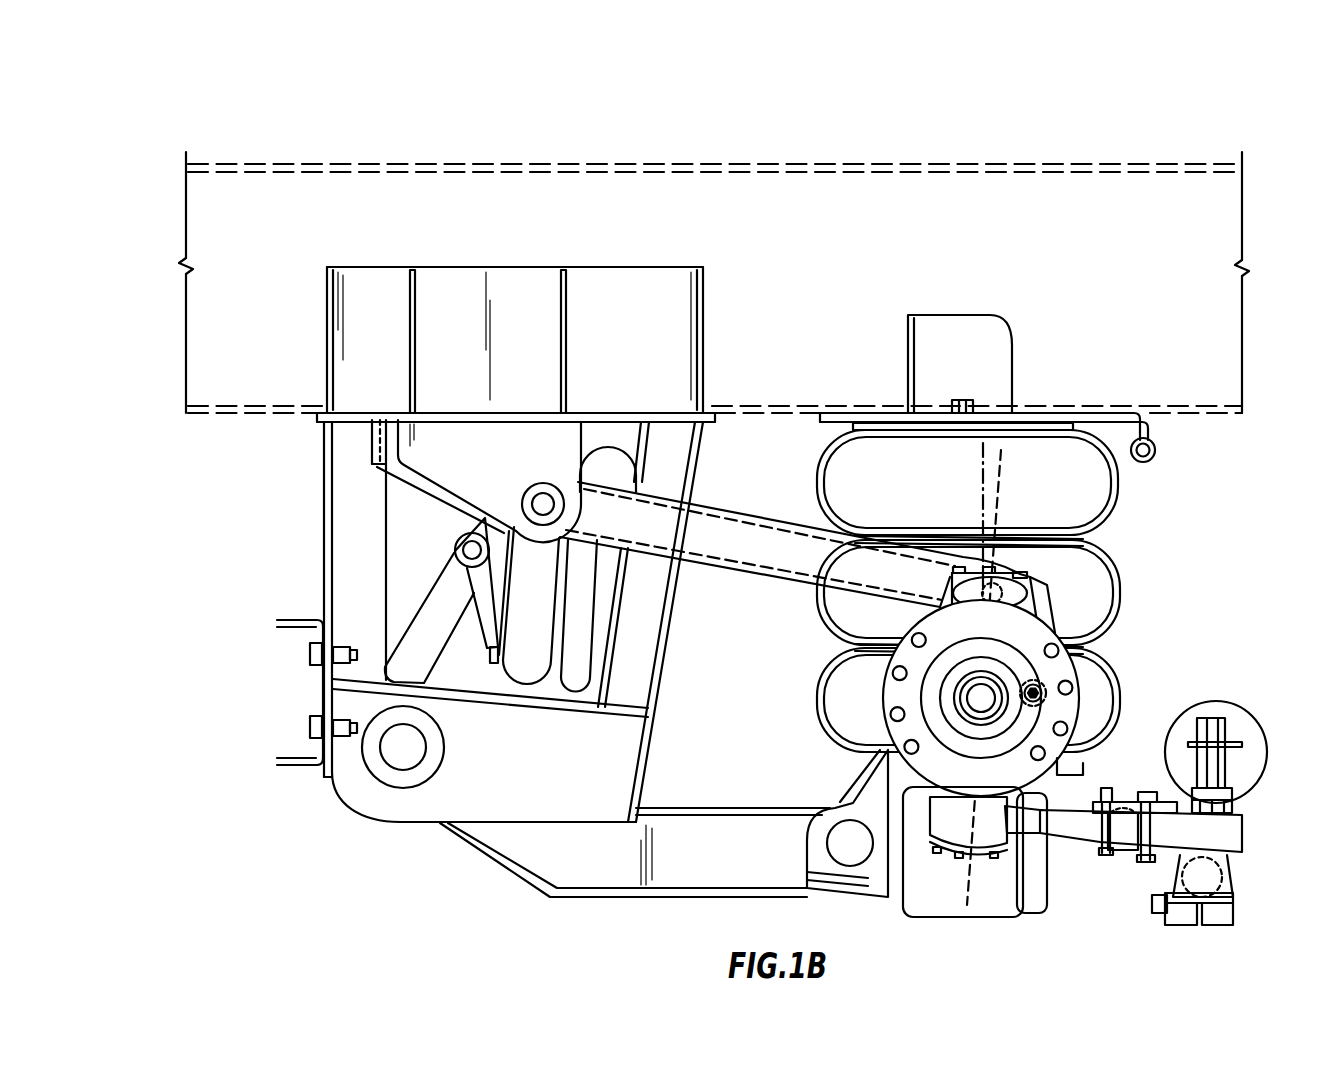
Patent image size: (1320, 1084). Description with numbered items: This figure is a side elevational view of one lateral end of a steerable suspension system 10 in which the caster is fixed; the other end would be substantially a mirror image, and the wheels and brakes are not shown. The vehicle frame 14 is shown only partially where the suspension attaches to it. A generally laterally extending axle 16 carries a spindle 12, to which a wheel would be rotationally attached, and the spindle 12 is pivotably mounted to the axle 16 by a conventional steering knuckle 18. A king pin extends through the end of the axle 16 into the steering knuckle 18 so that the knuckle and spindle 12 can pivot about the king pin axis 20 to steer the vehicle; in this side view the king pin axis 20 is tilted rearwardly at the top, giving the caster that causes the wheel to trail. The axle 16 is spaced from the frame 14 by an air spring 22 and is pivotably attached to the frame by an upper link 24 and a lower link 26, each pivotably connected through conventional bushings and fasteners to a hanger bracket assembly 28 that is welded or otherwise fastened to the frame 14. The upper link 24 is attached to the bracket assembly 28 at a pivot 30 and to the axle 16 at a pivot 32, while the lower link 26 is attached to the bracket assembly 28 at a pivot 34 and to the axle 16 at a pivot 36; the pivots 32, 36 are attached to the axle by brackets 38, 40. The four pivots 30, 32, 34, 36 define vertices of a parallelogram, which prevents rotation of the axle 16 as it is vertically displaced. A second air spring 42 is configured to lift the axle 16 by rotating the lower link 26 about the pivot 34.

The suspension system 10 is at (292, 853).
The spindle 12 is at (1000, 718).
The vehicle frame 14 is at (867, 168).
The axle 16 is at (1047, 893).
The steering knuckle 18 is at (1012, 823).
The king pin axis 20 is at (1000, 478).
The air spring 22 is at (1118, 578).
The upper link 24 is at (737, 578).
The lower link 26 is at (713, 808).
The hanger bracket assembly 28 is at (320, 505).
The pivot 30 is at (542, 497).
The pivot 32 is at (1030, 587).
The pivot 34 is at (426, 747).
The pivot 36 is at (847, 823).
The bracket 38 is at (1057, 607).
The bracket 40 is at (805, 859).
The air spring 42 is at (630, 449).